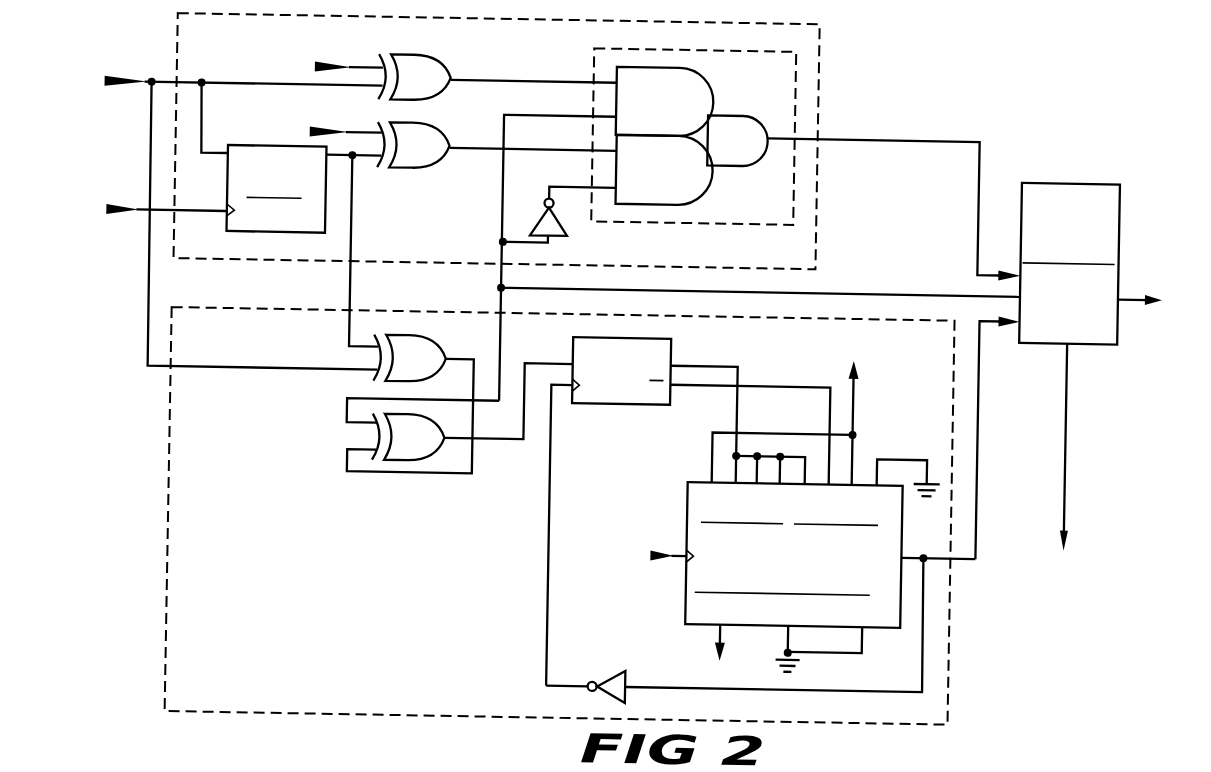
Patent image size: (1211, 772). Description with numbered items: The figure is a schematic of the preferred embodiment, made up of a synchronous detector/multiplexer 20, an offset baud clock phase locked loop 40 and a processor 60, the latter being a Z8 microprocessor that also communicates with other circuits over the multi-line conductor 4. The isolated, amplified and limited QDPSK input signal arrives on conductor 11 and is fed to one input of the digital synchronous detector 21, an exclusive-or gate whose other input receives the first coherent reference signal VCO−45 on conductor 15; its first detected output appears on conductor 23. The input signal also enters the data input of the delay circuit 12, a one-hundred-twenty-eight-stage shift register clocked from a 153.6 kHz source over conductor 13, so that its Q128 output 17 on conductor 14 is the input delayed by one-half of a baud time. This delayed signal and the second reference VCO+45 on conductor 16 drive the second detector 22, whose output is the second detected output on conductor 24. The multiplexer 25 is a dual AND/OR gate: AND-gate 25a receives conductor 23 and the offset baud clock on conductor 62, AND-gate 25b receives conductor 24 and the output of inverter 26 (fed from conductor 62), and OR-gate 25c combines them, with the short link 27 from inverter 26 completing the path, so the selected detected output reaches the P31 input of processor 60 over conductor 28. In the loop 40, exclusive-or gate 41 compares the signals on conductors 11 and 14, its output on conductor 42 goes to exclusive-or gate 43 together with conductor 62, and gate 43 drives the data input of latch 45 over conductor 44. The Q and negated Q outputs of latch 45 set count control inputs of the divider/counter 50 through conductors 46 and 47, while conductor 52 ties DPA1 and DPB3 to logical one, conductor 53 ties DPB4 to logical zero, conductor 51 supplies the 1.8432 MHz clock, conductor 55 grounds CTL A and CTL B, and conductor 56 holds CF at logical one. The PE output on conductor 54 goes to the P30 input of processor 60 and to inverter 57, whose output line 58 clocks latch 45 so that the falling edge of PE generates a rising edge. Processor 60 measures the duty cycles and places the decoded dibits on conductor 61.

The conductor 4 is at (1075, 405).
The conductor 11 is at (150, 76).
The delay circuit 12 is at (228, 165).
The conductor 13 is at (140, 204).
The conductor 14 is at (354, 160).
The conductor 15 is at (360, 58).
The conductor 16 is at (356, 124).
The Q128 output 17 is at (356, 150).
The synchronous detector/multiplexer 20 is at (822, 43).
The digital synchronous detector 21 is at (420, 51).
The digital synchronous detector 22 is at (412, 158).
The conductor 23 is at (500, 71).
The conductor 24 is at (470, 139).
The multiplexer 25 is at (596, 40).
The AND-gate 25a is at (706, 70).
The AND-gate 25b is at (710, 182).
The OR-gate 25c is at (739, 107).
The inverter 26 is at (564, 227).
The inverter output line 27 is at (561, 180).
The conductor 28 is at (846, 126).
The offset baud clock phase locked loop 40 is at (195, 302).
The exclusive-or gate 41 is at (420, 332).
The conductor 42 is at (462, 348).
The exclusive-or gate 43 is at (445, 418).
The conductor 44 is at (538, 353).
The latch 45 is at (677, 340).
The conductor 46 is at (750, 366).
The conductor 47 is at (698, 378).
The divider/counter 50 is at (696, 482).
The conductor 51 is at (681, 556).
The conductor 52 is at (862, 396).
The conductor 53 is at (900, 443).
The conductor 54 is at (937, 538).
The conductor 55 is at (812, 651).
The conductor 56 is at (722, 623).
The inverter 57 is at (628, 662).
The feedback line to clock 58 is at (556, 469).
The processor 60 is at (1058, 164).
The conductor 61 is at (1138, 278).
The conductor 62 is at (885, 279).